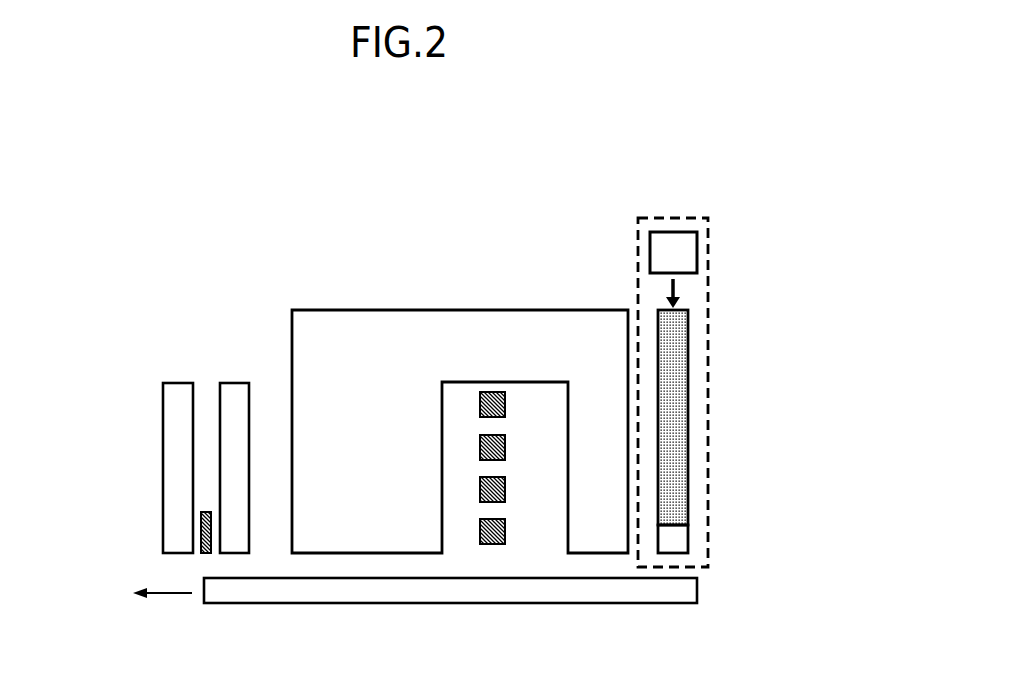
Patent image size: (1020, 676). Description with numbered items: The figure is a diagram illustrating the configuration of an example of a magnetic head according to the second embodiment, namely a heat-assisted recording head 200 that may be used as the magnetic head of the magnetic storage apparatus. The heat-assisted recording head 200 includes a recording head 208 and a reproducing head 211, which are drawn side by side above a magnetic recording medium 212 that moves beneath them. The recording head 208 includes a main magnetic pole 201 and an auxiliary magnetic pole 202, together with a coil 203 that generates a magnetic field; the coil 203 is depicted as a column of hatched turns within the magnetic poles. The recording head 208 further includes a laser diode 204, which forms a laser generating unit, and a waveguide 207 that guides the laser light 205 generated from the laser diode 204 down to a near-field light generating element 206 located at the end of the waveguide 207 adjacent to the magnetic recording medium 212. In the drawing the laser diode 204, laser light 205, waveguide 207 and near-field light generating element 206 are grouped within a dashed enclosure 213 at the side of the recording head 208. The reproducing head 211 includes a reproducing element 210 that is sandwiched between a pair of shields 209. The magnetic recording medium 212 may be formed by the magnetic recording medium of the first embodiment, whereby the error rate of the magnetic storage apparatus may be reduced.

The heat-assisted recording head 200 is at (197, 154).
The main magnetic pole 201 is at (598, 498).
The auxiliary magnetic pole 202 is at (403, 475).
The coil 203 is at (503, 402).
The laser diode 204 is at (685, 250).
The laser light 205 is at (677, 285).
The near-field light generating element 206 is at (680, 540).
The waveguide 207 is at (673, 343).
The recording head 208 is at (712, 204).
The shields 209 is at (232, 390).
The reproducing element 210 is at (203, 533).
The reproducing head 211 is at (268, 310).
The magnetic recording medium 212 is at (685, 592).
The ink ejection unit 213 is at (637, 245).